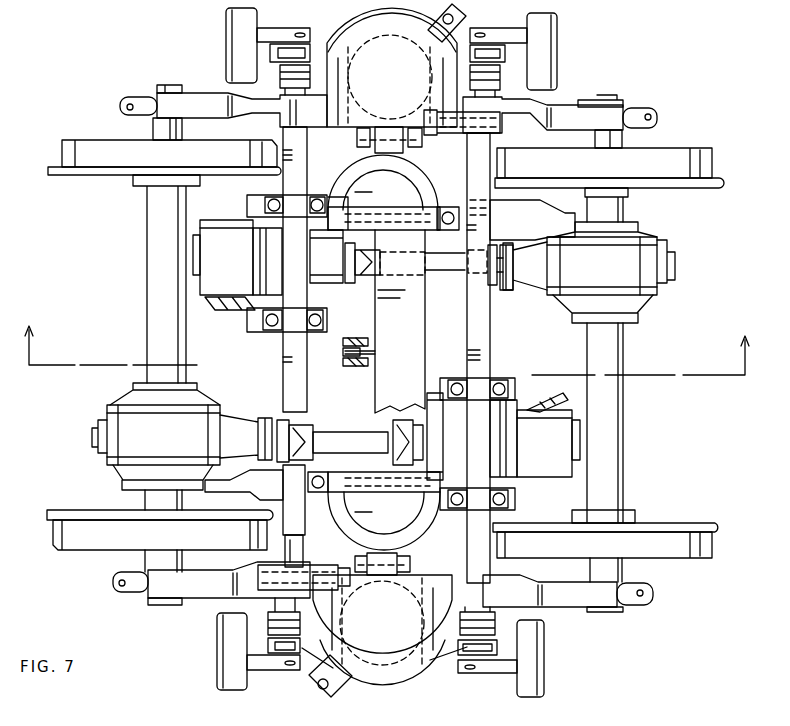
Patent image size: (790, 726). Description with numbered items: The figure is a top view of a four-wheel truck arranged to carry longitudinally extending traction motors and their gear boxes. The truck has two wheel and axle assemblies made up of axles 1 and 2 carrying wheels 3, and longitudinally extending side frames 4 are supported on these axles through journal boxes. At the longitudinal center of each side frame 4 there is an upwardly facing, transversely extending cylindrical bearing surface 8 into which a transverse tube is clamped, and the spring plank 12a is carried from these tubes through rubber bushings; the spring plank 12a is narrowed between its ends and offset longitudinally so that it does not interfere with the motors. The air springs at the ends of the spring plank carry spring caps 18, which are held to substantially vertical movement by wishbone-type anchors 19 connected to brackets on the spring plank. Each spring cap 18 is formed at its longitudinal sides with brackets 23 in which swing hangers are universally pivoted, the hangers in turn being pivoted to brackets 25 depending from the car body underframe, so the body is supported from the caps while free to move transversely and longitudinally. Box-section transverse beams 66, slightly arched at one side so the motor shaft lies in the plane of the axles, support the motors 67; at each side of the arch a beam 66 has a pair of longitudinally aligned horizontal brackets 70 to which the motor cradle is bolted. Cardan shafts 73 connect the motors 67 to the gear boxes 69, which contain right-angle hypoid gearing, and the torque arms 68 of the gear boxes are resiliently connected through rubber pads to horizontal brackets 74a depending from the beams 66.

The axle 1 is at (628, 417).
The axle 2 is at (145, 322).
The wheels 3 is at (736, 547).
The side frames 4 is at (538, 100).
The cylindrical bearing surfaces 8 is at (386, 339).
The spring plank 12a is at (384, 321).
The spring caps 18 is at (384, 350).
The anchors 19 is at (412, 172).
The brackets 23 is at (306, 662).
The brackets 25 is at (488, 673).
The transverse beams 66 is at (282, 378).
The motors 67 is at (386, 348).
The torque arms 68 is at (548, 214).
The gear boxes 69 is at (383, 356).
The horizontal brackets 70 is at (266, 202).
The Cardan shafts 73 is at (441, 268).
The horizontal brackets 74a is at (317, 510).